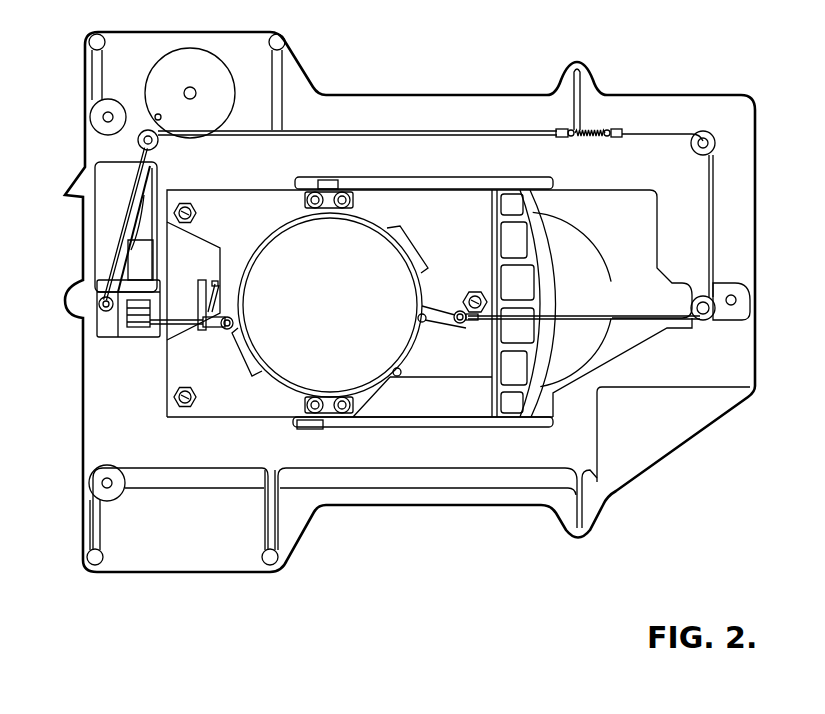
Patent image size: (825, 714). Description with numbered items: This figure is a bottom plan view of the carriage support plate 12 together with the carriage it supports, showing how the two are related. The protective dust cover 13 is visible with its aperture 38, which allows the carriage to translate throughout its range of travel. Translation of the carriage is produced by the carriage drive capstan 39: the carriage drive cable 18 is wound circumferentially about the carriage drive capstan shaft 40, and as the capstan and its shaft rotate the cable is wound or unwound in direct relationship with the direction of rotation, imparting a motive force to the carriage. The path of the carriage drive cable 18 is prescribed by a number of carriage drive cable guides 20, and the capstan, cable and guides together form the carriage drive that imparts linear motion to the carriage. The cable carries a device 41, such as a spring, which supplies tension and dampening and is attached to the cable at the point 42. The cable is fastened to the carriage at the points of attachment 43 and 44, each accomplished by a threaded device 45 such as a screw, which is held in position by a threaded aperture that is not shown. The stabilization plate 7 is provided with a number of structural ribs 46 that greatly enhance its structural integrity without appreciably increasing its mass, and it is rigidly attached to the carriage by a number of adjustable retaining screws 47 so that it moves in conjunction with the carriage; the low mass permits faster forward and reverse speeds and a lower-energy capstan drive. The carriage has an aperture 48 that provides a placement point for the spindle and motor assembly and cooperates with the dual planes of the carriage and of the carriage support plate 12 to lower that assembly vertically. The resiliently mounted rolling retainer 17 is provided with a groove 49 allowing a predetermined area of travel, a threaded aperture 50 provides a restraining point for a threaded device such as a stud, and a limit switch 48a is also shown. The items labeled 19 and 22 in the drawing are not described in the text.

The stabilization plate 7 is at (548, 295).
The carriage support plate 12 is at (760, 350).
The protective dust cover 13 is at (640, 270).
The resiliently mounted rolling retainer 17 is at (316, 421).
The carriage drive cable 18 is at (232, 136).
The drum 19 is at (218, 72).
The carriage drive cable guides 20 is at (160, 144).
The slot 22 is at (282, 115).
The aperture 38 is at (580, 250).
The carriage drive capstan 39 is at (98, 302).
The carriage drive capstan shaft 40 is at (137, 335).
The device 41 is at (623, 140).
The point 42 is at (558, 140).
The point of attachment 43 is at (238, 318).
The point of attachment 44 is at (456, 312).
The threaded device 45 is at (240, 336).
The structural ribs 46 is at (530, 275).
The adjustable retaining screws 47 is at (192, 397).
The aperture 48 is at (333, 302).
The limit switch 48a is at (228, 292).
The groove 49 is at (460, 423).
The threaded aperture 50 is at (740, 298).